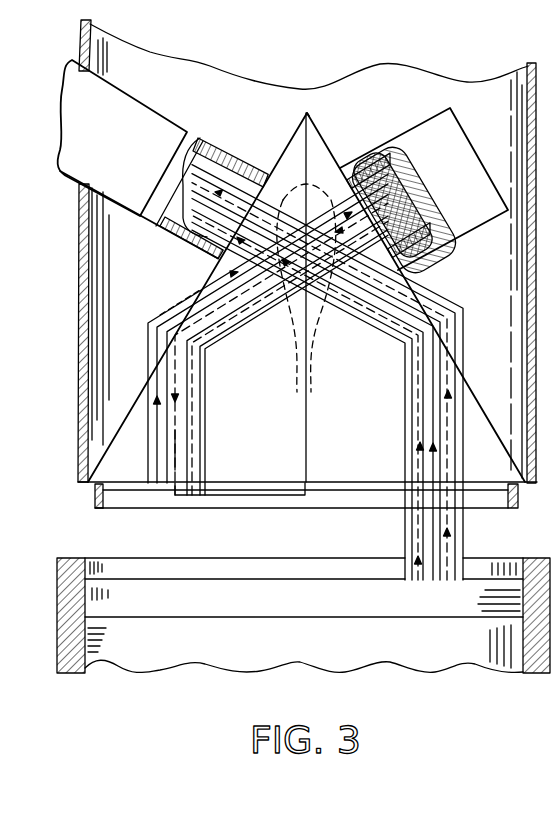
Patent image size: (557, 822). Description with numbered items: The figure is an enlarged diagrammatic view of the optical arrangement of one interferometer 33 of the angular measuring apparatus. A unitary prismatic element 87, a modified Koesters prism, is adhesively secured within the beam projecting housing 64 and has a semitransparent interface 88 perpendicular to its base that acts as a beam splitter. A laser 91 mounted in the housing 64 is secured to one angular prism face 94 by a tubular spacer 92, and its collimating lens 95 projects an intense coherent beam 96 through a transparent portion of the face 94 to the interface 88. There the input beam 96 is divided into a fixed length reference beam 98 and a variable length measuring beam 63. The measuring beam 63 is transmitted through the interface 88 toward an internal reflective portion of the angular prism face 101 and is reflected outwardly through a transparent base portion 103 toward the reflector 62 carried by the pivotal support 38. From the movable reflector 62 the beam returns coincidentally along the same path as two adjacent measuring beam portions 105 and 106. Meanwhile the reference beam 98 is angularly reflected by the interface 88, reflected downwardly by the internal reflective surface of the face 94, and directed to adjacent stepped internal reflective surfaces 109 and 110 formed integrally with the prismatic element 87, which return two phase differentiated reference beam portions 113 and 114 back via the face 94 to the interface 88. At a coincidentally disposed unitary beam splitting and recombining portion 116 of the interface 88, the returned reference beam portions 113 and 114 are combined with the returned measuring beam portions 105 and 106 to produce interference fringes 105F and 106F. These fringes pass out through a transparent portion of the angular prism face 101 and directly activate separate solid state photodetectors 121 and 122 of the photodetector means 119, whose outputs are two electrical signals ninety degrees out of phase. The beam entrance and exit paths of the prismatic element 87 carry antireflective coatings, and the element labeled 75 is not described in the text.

The interferometer 33 is at (45, 418).
The pivotal support 38 is at (58, 585).
The reflector 62 is at (198, 570).
The measuring beam 63 is at (365, 280).
The beam projecting housing 64 is at (82, 312).
The base 75 is at (95, 505).
The prismatic element 87 is at (340, 147).
The semitransparent interface 88 is at (304, 424).
The laser 91 is at (112, 137).
The tubular spacer 92 is at (262, 128).
The angular prism face 94 is at (178, 323).
The collimating lens 95 is at (193, 168).
The beam 96 is at (180, 242).
The reference beam 98 is at (248, 290).
The angular prism face 101 is at (470, 372).
The transparent base portion 103 is at (385, 492).
The measuring beam portion 105 is at (402, 308).
The interference fringes 105F is at (388, 285).
The measuring beam portion 106 is at (390, 322).
The interference fringes 106F is at (400, 252).
The stepped internal reflective surface 109 is at (95, 486).
The stepped internal reflective surface 110 is at (270, 483).
The reference beam portion 113 is at (240, 330).
The reference beam portion 114 is at (215, 275).
The unitary beam splitting and recombining portion 116 is at (297, 377).
The photodetector means 119 is at (456, 137).
The photodetector 121 is at (392, 183).
The photodetector 122 is at (420, 228).